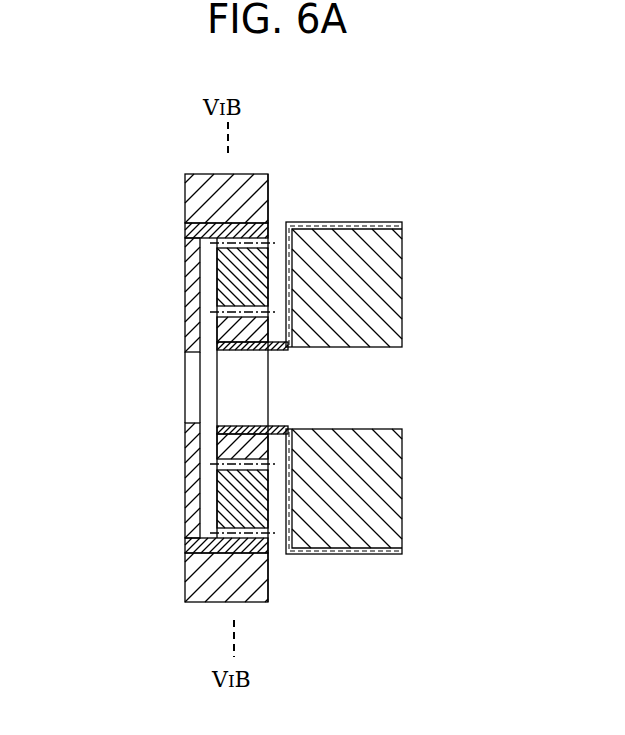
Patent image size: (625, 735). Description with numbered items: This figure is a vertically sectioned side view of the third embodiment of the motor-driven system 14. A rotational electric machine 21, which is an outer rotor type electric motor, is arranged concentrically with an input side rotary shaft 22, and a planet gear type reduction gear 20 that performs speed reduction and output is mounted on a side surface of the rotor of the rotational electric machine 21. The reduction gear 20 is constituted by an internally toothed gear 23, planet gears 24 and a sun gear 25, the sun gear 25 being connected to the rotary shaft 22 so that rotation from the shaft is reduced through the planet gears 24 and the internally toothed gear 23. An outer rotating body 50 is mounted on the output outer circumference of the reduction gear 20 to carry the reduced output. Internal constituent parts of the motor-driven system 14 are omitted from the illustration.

The motor-driven system 14 is at (203, 156).
The reduction gear 20 is at (183, 331).
The rotational electric machine 21 is at (377, 284).
The input side rotary shaft 22 is at (363, 222).
The internally toothed gear 23 is at (185, 248).
The planet gears 24 is at (217, 292).
The sun gear 25 is at (218, 443).
The outer rotating body 50 is at (205, 194).